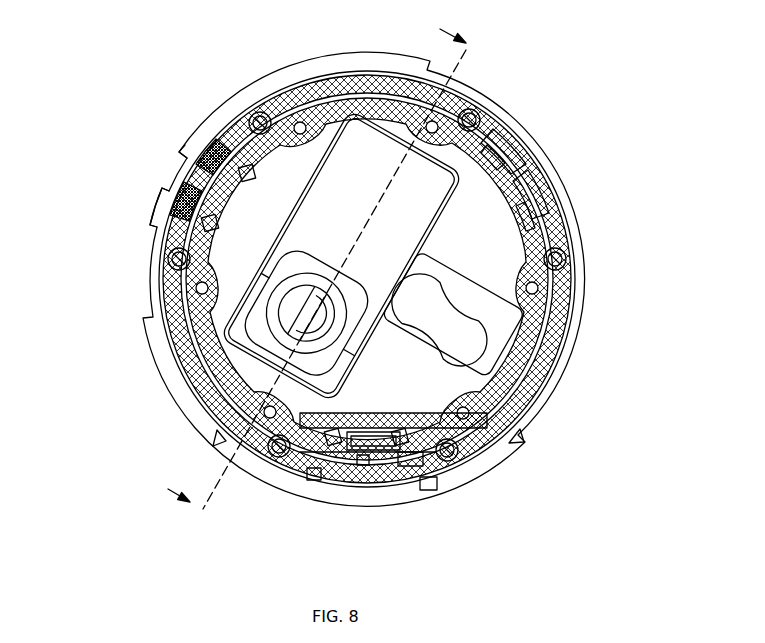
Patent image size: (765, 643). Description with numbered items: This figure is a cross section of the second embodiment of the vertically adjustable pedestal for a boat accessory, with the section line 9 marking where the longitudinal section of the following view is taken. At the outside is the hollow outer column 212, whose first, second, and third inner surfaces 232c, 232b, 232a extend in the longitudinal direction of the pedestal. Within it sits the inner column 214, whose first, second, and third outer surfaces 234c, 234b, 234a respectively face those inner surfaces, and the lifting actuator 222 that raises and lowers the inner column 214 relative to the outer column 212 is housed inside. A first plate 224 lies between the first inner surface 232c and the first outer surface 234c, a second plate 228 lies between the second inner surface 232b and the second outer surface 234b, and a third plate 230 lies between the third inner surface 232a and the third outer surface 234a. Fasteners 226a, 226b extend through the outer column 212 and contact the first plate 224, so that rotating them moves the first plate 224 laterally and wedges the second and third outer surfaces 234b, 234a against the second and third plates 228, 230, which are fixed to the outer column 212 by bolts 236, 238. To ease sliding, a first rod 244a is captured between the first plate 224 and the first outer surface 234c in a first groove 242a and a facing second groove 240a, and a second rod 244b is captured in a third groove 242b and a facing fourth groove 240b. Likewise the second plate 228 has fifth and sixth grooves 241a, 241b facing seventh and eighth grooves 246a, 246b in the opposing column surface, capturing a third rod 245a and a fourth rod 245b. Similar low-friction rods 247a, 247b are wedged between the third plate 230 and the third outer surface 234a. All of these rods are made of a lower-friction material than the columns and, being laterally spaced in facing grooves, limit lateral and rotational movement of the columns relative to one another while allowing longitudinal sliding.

The outer column 212 is at (457, 108).
The inner column 214 is at (377, 93).
The lifting actuator 222 is at (440, 243).
The first plate 224 is at (232, 197).
The fastener 226a is at (182, 153).
The fastener 226b is at (158, 200).
The second plate 228 is at (410, 466).
The third plate 230 is at (546, 200).
The third inner surface 232a is at (567, 258).
The second inner surface 232b is at (450, 462).
The first inner surface 232c is at (172, 255).
The third outer surface 234a is at (488, 122).
The second outer surface 234b is at (283, 460).
The first outer surface 234c is at (265, 115).
The bolt 236 is at (363, 466).
The bolt 238 is at (522, 180).
The second groove 240a is at (298, 176).
The fourth groove 240b is at (234, 230).
The fifth groove 241a is at (322, 470).
The sixth groove 241b is at (428, 488).
The first groove 242a is at (208, 150).
The third groove 242b is at (185, 195).
The first rod 244a is at (243, 166).
The second rod 244b is at (205, 222).
The third rod 245a is at (238, 442).
The fourth rod 245b is at (527, 436).
The seventh groove 246a is at (342, 428).
The eighth groove 246b is at (405, 428).
The low-friction rod 247a is at (537, 221).
The low-friction rod 247b is at (505, 155).
The section line 9- 9 is at (307, 260).